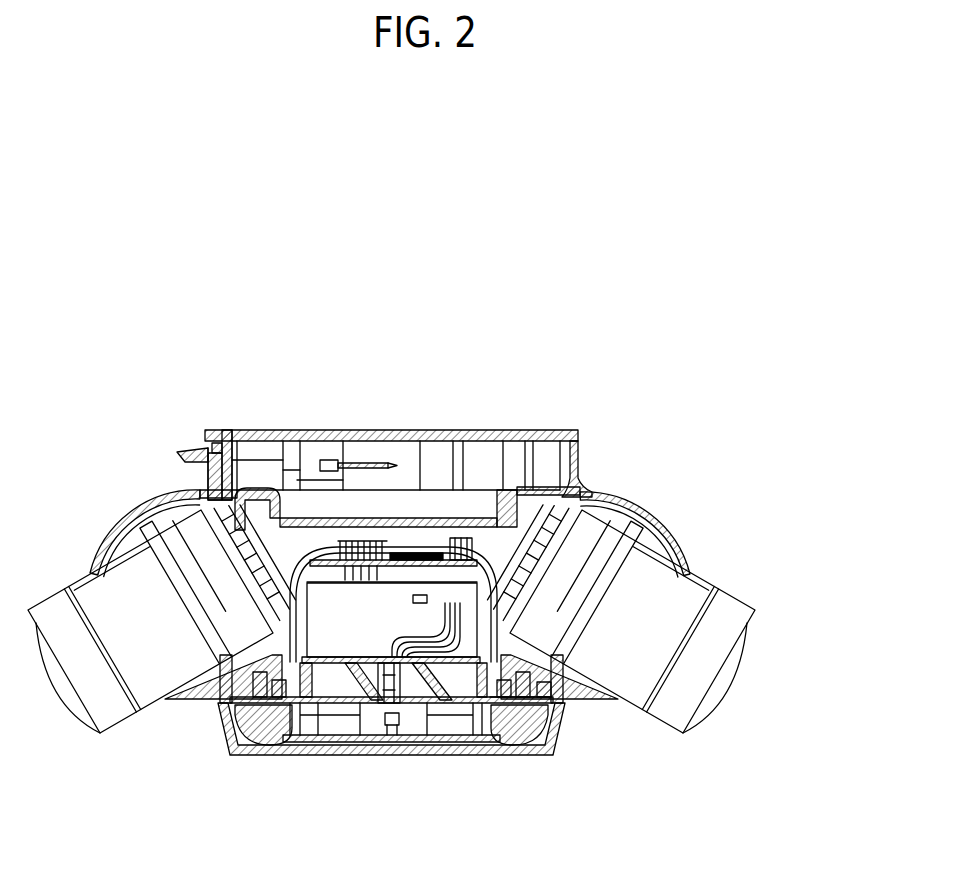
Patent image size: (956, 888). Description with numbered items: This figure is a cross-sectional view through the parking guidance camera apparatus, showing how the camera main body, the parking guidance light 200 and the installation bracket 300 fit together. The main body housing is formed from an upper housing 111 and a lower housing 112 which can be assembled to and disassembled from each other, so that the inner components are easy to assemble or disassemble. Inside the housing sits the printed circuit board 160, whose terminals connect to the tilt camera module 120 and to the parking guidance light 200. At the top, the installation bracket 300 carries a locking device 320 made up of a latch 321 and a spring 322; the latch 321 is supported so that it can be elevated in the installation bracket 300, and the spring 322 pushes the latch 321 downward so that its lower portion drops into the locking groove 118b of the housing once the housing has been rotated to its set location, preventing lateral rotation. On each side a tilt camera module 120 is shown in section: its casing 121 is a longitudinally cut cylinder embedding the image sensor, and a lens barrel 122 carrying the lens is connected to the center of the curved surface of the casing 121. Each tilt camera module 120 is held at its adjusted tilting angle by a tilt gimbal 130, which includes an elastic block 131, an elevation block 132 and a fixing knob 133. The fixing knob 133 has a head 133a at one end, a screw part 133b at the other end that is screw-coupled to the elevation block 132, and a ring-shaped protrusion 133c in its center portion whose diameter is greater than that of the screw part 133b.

The installation bracket 300 is at (510, 428).
The upper housing 111 is at (350, 517).
The printed circuit board 160 is at (418, 557).
The locking device 320 is at (115, 420).
The latch 321 is at (207, 443).
The spring 322 is at (207, 471).
The locking groove 118b is at (205, 490).
The casing 121 is at (680, 532).
The lens barrel 122 is at (682, 585).
The tilt camera module 120 is at (132, 722).
The parking guidance light 200 is at (243, 755).
The lower housing 112 is at (334, 703).
The head 133a is at (522, 733).
The screw part 133b is at (487, 684).
The ring-shaped protrusion 133c is at (505, 684).
The fixing knob 133 is at (545, 812).
The elevation block 132 is at (548, 694).
The elastic block 131 is at (557, 706).
The tilt gimbal 130 is at (625, 849).